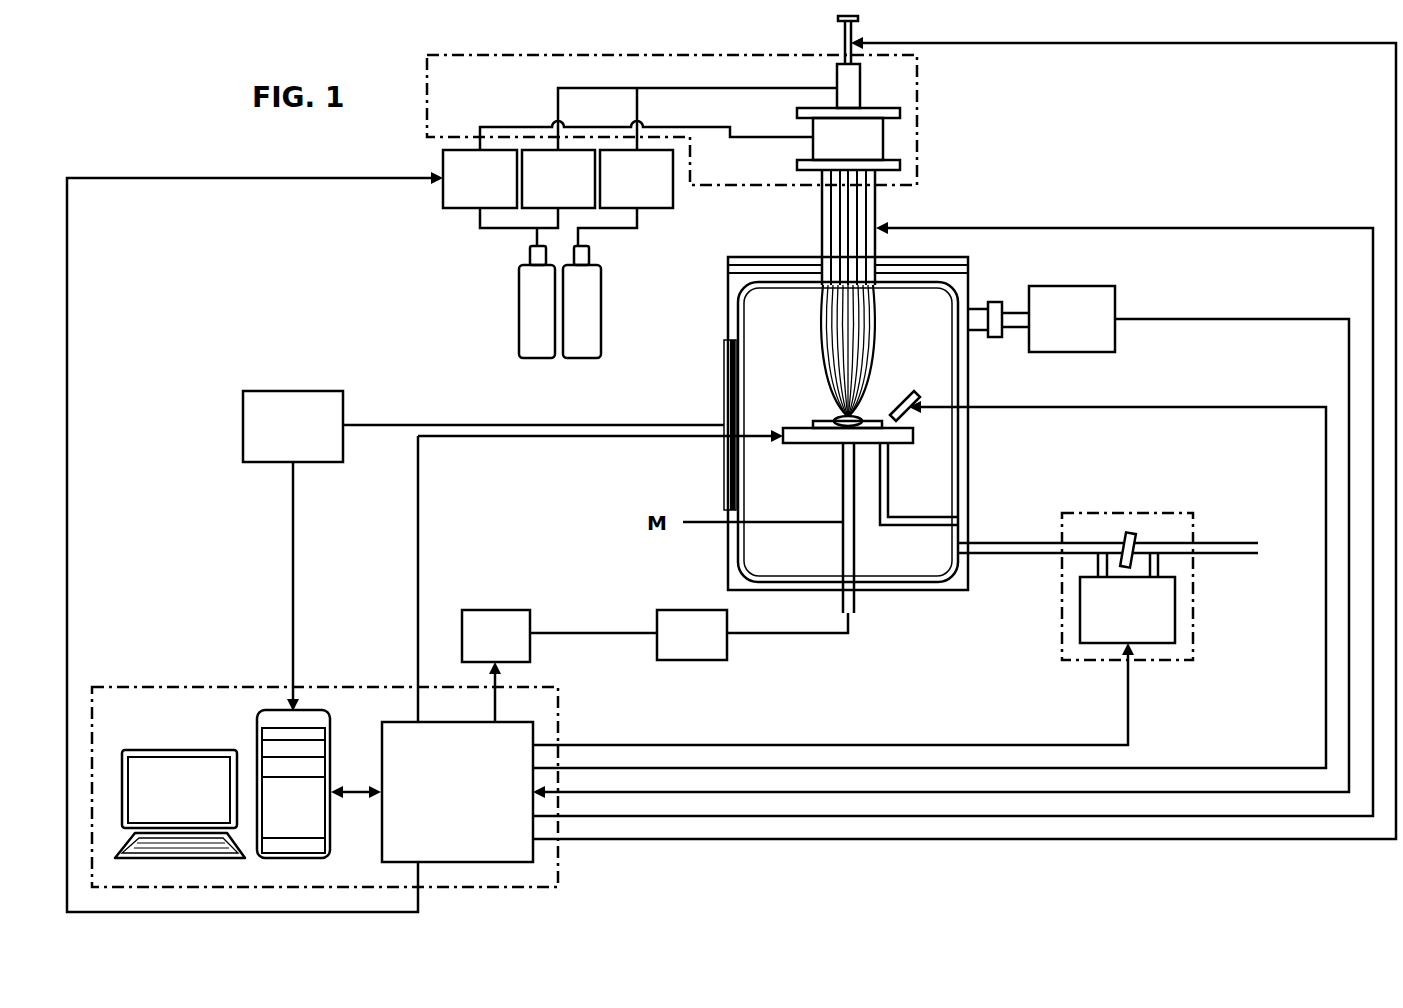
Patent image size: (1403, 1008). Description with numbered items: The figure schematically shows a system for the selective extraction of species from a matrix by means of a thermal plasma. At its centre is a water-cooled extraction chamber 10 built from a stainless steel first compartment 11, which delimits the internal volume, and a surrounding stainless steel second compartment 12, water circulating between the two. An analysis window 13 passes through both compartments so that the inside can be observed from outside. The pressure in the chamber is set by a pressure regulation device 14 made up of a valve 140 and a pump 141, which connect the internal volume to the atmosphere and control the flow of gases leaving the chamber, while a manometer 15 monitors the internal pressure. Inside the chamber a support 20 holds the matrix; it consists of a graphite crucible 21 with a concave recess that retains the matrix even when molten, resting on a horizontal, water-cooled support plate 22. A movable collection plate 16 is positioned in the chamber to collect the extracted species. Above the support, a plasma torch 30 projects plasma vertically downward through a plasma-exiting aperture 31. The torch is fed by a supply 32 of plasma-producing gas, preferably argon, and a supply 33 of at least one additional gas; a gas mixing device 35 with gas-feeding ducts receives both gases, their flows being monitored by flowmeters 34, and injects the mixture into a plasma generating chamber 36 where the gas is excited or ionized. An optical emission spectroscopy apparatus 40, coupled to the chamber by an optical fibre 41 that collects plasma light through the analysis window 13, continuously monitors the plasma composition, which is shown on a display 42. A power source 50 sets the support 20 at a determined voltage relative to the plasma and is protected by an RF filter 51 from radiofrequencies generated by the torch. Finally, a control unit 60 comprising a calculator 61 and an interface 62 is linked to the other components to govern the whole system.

The extraction chamber 10 is at (982, 432).
The first compartment 11 is at (890, 578).
The second compartment 12 is at (968, 582).
The analysis window 13 is at (712, 397).
The pressure regulation device 14 is at (1195, 586).
The manometer 15 is at (1060, 329).
The collection plate 16 is at (920, 386).
The support 20 is at (832, 456).
The crucible 21 is at (877, 408).
The support plate 22 is at (900, 444).
The plasma torch 30 is at (895, 134).
The plasma-exiting aperture 31 is at (840, 302).
The supply of plasma-producing gas 32 is at (525, 324).
The supply of additional gas 33 is at (570, 324).
The flowmeters 34 is at (650, 190).
The gas mixing device 35 is at (427, 97).
The plasma generating chamber 36 is at (812, 227).
The optical emission spectroscopy apparatus 40 is at (280, 437).
The optical fibre 41 is at (386, 424).
The display 42 is at (178, 750).
The power source 50 is at (483, 646).
The RF filter 51 is at (679, 645).
The control unit 60 is at (560, 720).
The calculator 61 is at (332, 760).
The interface 62 is at (444, 803).
The valve 140 is at (1140, 528).
The pump 141 is at (1110, 621).